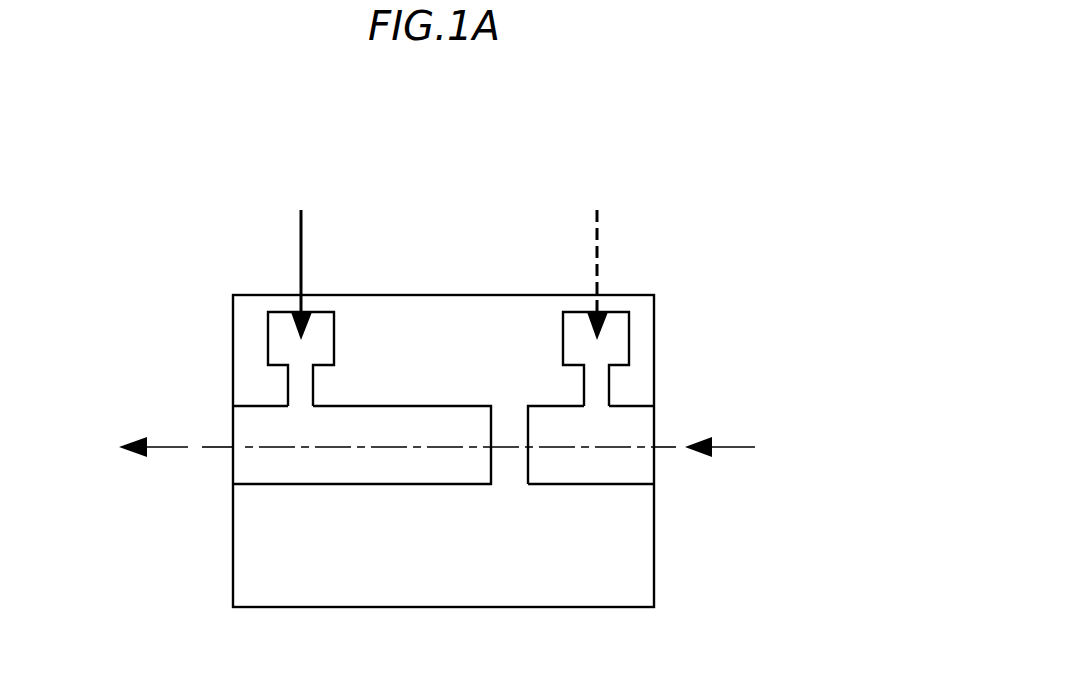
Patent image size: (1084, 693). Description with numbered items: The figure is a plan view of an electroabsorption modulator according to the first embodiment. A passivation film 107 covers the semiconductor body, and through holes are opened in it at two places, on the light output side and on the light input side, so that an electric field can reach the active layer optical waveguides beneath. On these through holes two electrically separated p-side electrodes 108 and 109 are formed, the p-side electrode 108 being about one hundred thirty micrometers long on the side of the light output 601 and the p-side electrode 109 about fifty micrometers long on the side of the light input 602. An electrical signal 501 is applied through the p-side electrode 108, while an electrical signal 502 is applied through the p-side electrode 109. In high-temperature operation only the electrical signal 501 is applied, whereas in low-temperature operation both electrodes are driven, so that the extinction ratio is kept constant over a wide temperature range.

The passivation film 107 is at (648, 374).
The p-side electrode 108 is at (285, 316).
The p-side electrode 109 is at (578, 316).
The electrical signal 501 is at (331, 243).
The electrical signal 502 is at (620, 243).
The light output 601 is at (150, 446).
The light input 602 is at (738, 446).